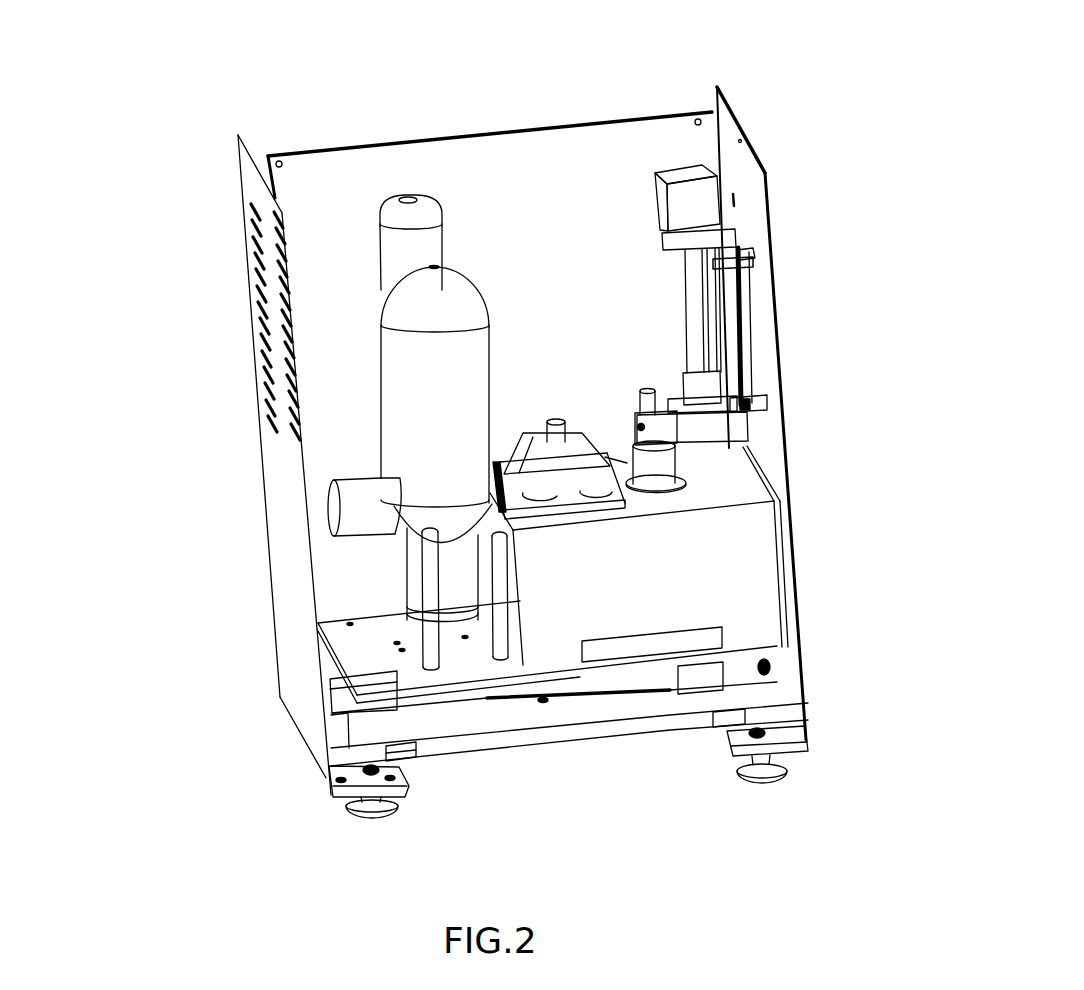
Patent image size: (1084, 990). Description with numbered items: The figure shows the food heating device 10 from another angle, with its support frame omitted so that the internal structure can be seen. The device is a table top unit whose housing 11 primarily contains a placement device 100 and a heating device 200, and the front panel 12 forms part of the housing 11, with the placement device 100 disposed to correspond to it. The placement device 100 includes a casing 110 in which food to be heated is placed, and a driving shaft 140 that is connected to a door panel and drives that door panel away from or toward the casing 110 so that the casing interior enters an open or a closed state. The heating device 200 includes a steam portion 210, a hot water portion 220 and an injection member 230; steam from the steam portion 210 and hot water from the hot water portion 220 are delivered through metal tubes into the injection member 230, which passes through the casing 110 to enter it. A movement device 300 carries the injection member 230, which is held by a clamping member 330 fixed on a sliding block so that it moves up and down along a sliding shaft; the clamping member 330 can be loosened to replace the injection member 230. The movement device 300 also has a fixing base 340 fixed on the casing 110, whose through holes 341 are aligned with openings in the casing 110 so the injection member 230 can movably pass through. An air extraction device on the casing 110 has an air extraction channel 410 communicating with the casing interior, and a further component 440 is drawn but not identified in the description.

The food heating device 10 is at (790, 94).
The housing 11 is at (772, 352).
The front panel 12 is at (797, 434).
The placement device 100 is at (897, 553).
The casing 110 is at (743, 553).
The driving shaft 140 is at (745, 665).
The heating device 200 is at (110, 223).
The steam portion 210 is at (652, 388).
The hot water portion 220 is at (395, 211).
The injection member 230 is at (405, 372).
The movement device 300 is at (728, 312).
The clamping member 330 is at (633, 437).
The fixing base 340 is at (663, 470).
The through holes 341 is at (633, 440).
The air extraction channel 410 is at (545, 423).
The hopper housing 440 is at (560, 463).